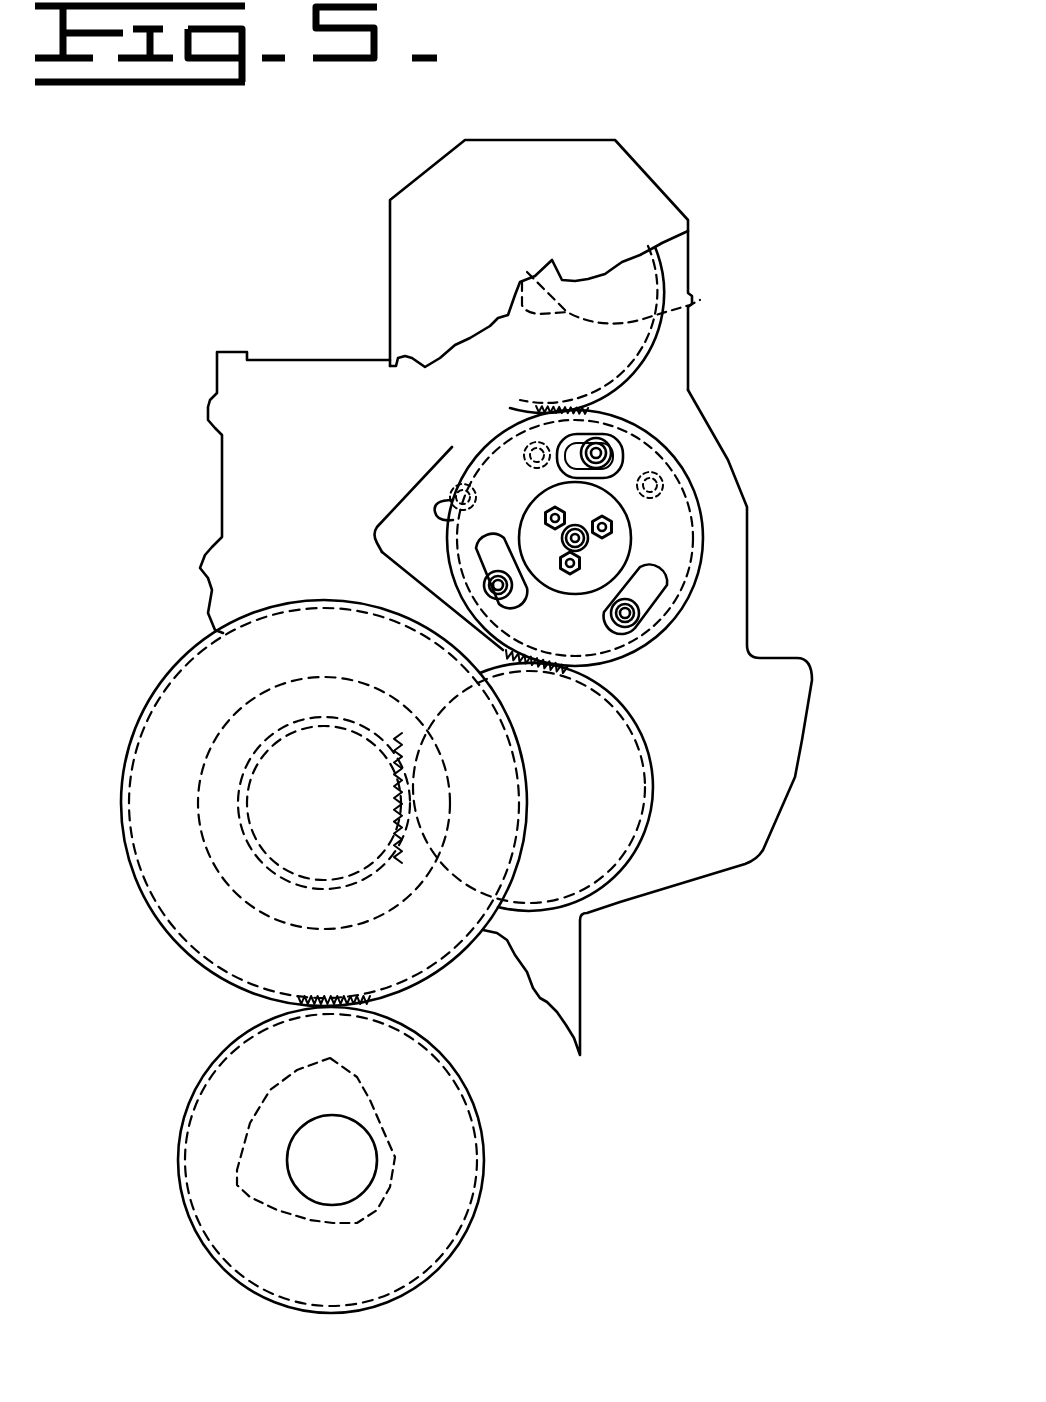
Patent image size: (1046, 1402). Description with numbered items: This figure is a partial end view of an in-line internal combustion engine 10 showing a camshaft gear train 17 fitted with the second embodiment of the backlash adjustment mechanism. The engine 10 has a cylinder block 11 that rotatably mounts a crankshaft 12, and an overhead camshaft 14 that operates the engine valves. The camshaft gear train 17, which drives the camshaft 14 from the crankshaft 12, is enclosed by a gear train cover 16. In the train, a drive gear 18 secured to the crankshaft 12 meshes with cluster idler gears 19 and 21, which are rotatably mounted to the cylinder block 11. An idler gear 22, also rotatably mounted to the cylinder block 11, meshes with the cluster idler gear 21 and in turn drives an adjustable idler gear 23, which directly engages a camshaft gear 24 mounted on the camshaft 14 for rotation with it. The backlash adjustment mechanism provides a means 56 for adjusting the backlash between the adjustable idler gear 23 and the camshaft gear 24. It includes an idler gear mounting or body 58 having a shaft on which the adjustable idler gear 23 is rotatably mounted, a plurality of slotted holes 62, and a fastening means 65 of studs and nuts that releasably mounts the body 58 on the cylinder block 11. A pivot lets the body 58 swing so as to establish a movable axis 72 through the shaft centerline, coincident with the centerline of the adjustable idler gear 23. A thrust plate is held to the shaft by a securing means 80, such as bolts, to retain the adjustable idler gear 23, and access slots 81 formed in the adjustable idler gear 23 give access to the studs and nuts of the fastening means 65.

The internal combustion engine 10 is at (728, 218).
The cylinder block 11 is at (568, 980).
The crankshaft 12 is at (367, 1127).
The overhead camshaft 14 is at (700, 300).
The gear train cover 16 is at (535, 147).
The camshaft gear train 17 is at (644, 367).
The drive gear 18 is at (487, 1178).
The cluster idler gear 19 is at (138, 882).
The cluster idler gear 21 is at (240, 763).
The idler gear 22 is at (647, 825).
The adjustable idler gear 23 is at (640, 418).
The camshaft gear 24 is at (647, 349).
The means for adjusting backlash 56 is at (427, 463).
The idler gear mounting 58 is at (378, 525).
The slotted holes 62 is at (567, 438).
The fastening means 65 is at (612, 453).
The movable axis 72 is at (570, 535).
The securing means 80 is at (616, 527).
The access slots 81 is at (660, 597).